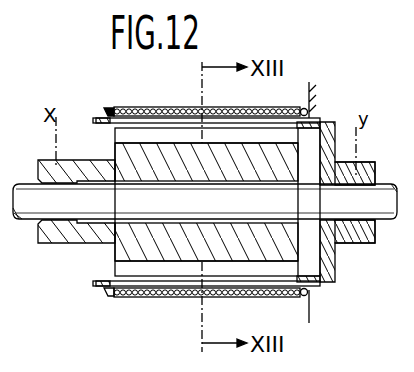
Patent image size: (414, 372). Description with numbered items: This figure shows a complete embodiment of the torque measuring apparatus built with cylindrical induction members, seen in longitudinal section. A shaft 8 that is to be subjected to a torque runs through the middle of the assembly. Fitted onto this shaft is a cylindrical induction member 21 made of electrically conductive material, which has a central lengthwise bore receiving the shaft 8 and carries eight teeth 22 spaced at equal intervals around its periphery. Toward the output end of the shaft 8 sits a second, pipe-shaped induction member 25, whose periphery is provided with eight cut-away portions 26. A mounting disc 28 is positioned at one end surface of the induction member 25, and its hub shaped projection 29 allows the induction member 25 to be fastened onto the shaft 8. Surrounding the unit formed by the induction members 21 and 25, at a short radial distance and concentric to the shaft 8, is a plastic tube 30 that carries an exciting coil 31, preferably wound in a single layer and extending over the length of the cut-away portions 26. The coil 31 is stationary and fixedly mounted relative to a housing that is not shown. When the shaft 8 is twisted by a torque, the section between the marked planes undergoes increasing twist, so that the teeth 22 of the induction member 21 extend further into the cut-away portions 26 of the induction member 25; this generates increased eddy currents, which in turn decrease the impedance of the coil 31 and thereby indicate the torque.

The shaft 8 is at (384, 218).
The cylindrical induction member 21 is at (84, 244).
The teeth 22 is at (160, 138).
The pipe-shaped induction member 25 is at (330, 112).
The cut-away portions 26 is at (128, 119).
The mounting disc 28 is at (333, 283).
The hub shaped projection 29 is at (366, 175).
The plastic tube 30 is at (108, 108).
The exciting coil 31 is at (168, 300).